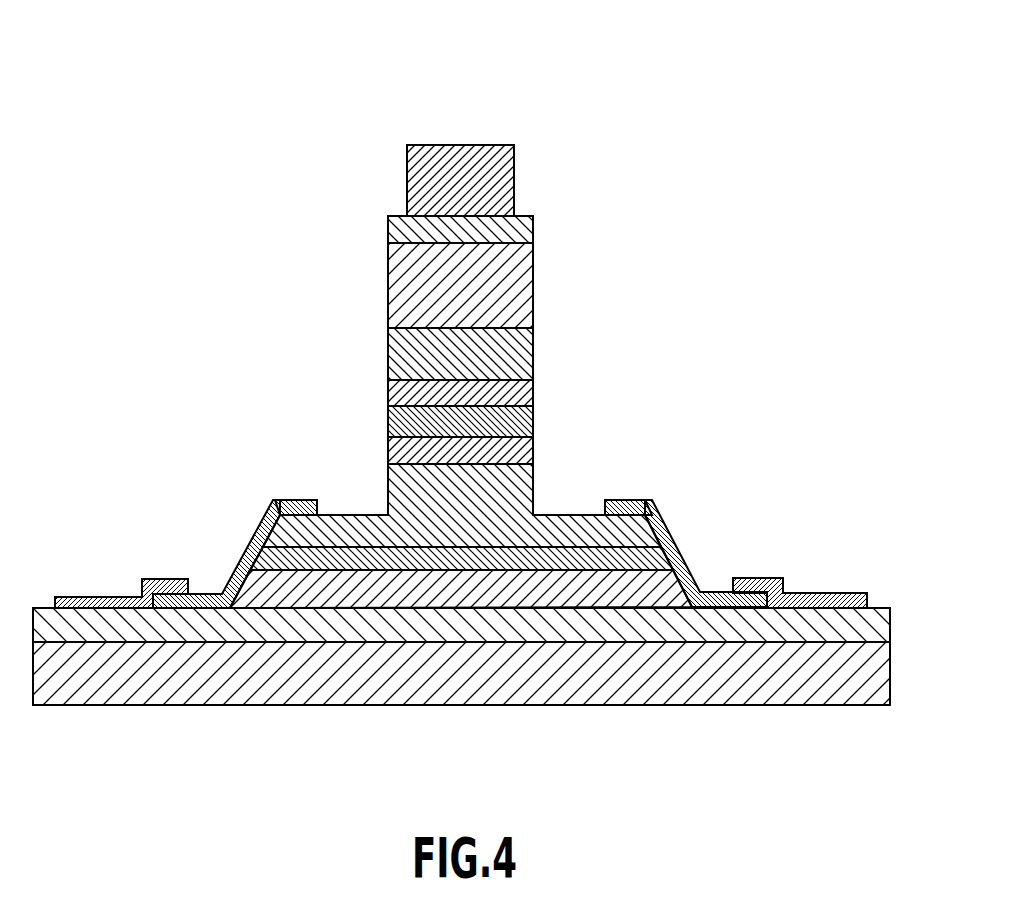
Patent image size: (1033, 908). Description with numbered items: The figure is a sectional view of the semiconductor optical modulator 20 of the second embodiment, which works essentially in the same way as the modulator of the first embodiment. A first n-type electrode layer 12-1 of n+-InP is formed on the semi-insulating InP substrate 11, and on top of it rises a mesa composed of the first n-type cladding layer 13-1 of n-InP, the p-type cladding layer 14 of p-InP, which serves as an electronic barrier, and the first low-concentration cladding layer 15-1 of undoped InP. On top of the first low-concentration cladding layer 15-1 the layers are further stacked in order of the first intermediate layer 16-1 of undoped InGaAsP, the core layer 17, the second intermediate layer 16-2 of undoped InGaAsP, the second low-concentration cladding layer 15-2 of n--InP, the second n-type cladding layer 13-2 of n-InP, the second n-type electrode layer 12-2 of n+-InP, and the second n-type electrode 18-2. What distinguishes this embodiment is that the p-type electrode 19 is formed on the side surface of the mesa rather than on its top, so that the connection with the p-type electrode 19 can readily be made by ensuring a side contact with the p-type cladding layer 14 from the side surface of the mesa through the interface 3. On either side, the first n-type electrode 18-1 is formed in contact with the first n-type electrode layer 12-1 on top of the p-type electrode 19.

The semi-insulating InP substrate 11 is at (237, 680).
The first n-type electrode layer 12-1 is at (107, 633).
The second n-type electrode layer 12-2 is at (533, 231).
The first n-type cladding layer 13-1 is at (668, 585).
The second n-type cladding layer 13-2 is at (533, 288).
The p-type cladding layer 14 is at (640, 553).
The first low-concentration cladding layer 15-1 is at (389, 482).
The second low-concentration cladding layer 15-2 is at (533, 353).
The first intermediate layer 16-1 is at (533, 457).
The second intermediate layer 16-2 is at (533, 397).
The core layer 17 is at (533, 425).
The first n-type electrode 18-1 is at (103, 597).
The second n-type electrode 18-2 is at (514, 182).
The p-type electrode 19 is at (275, 500).
The interface 3 is at (250, 548).
The semiconductor optical modulator 20 is at (705, 133).